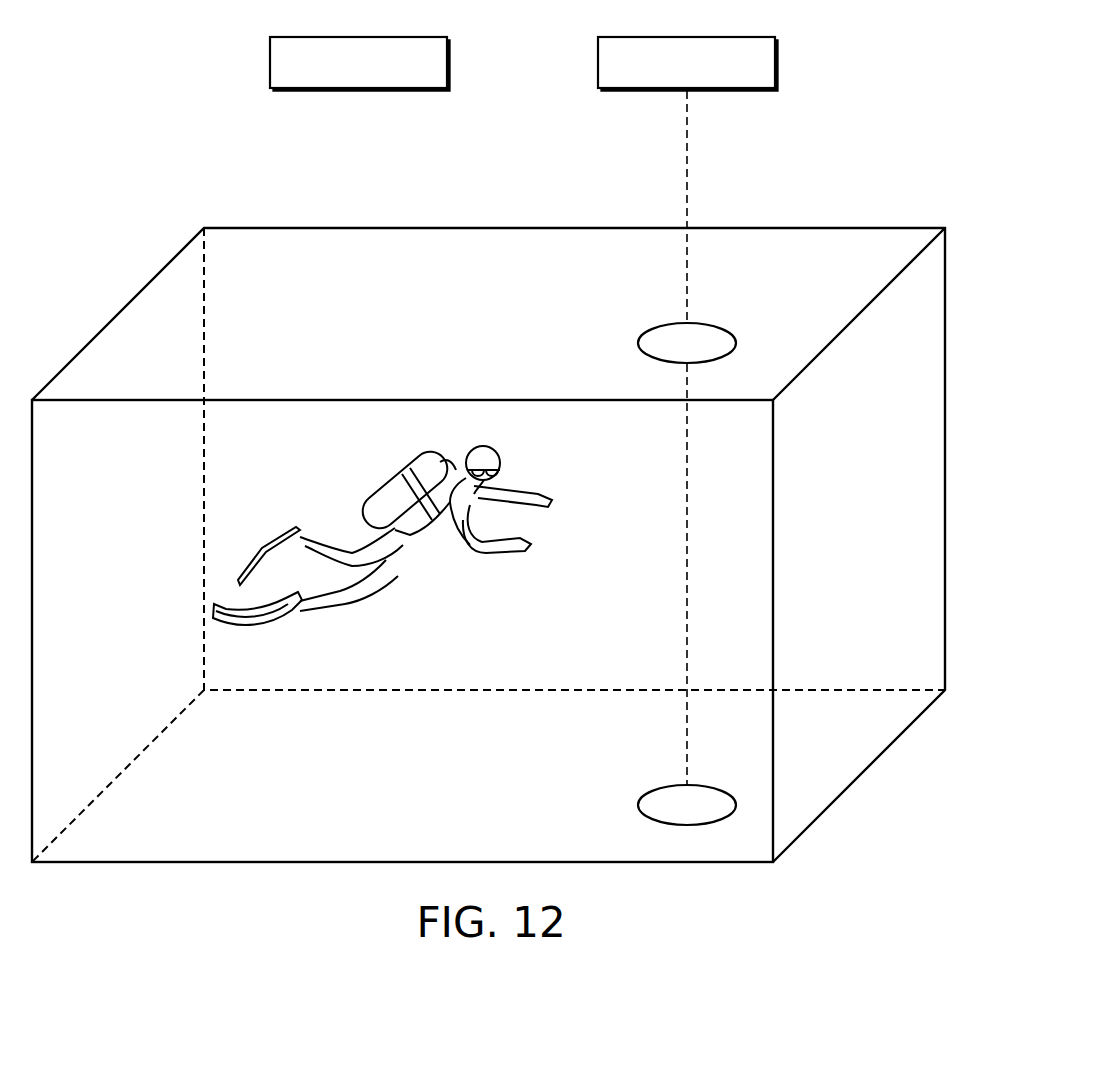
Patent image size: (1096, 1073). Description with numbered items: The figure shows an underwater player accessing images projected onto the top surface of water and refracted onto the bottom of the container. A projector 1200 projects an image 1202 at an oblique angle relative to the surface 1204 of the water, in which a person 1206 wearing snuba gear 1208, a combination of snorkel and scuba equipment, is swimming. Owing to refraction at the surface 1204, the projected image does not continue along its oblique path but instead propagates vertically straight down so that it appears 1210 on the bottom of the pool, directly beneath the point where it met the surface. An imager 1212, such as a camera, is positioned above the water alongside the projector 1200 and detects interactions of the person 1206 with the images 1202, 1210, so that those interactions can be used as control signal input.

The projector 1200 is at (598, 64).
The imager 1212 is at (270, 64).
The surface of water 1204 is at (398, 298).
The image 1202 is at (648, 358).
The image appearing on bottom of pool 1210 is at (648, 820).
The person 1206 is at (393, 584).
The snuba gear 1208 is at (502, 469).